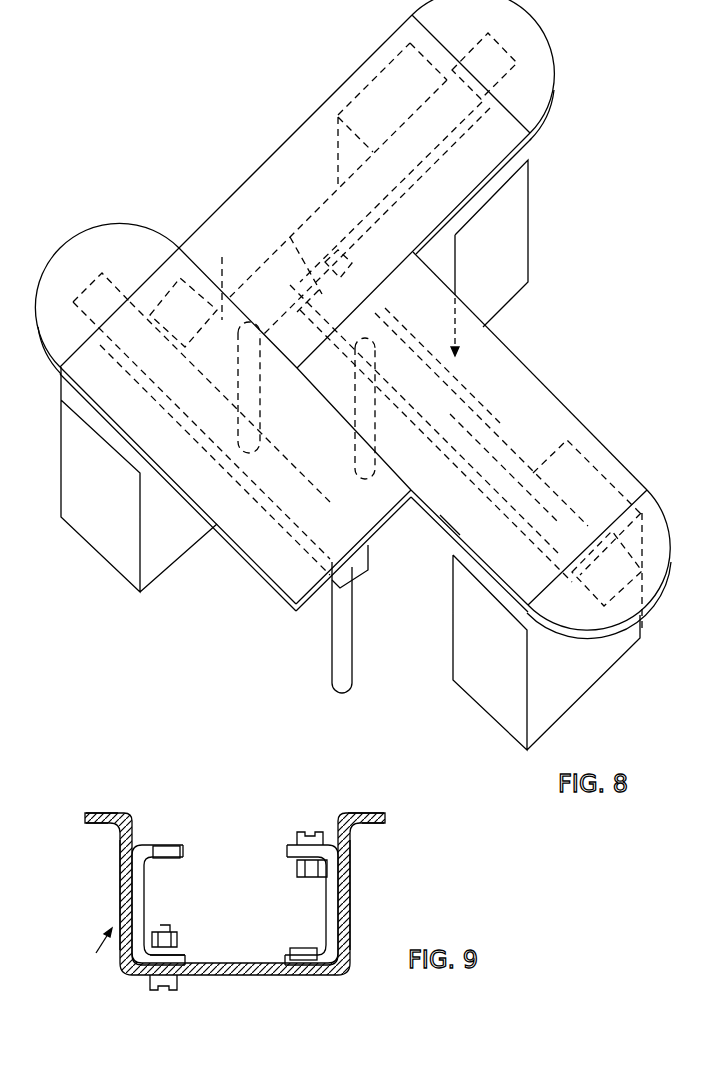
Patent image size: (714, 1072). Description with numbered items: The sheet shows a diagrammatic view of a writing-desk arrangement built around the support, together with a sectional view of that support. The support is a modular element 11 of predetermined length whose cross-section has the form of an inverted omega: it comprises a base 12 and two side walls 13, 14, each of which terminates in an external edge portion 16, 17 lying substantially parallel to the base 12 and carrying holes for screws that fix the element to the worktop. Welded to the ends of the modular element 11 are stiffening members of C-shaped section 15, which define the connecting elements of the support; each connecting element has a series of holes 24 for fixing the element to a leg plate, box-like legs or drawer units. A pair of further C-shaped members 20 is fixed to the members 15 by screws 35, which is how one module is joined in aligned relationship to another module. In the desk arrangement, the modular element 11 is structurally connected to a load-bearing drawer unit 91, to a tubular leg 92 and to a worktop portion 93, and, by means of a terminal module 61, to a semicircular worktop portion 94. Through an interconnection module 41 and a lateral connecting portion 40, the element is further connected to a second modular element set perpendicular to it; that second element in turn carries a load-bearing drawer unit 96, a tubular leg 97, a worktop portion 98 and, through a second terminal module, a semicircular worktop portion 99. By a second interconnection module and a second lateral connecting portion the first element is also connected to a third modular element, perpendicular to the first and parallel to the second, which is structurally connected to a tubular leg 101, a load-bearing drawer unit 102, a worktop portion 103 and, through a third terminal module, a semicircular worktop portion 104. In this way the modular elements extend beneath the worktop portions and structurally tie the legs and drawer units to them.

In FIG. 8, the modular element 11 is at (325, 228).
In FIG. 9, the modular element 11 is at (97, 952).
In FIG. 9, the base 12 is at (230, 975).
In FIG. 9, the side wall 13 is at (350, 880).
In FIG. 9, the side wall 14 is at (120, 867).
In FIG. 9, the C-shaped member 15 is at (183, 850).
In FIG. 9, the edge portion 16 is at (369, 813).
In FIG. 9, the edge portion 17 is at (98, 812).
In FIG. 9, the C-shaped member 20 is at (290, 948).
In FIG. 9, the holes 24 is at (160, 845).
In FIG. 9, the screws 35 is at (310, 832).
In FIG. 8, the lateral connecting portion 40 is at (190, 360).
In FIG. 8, the interconnection module 41 is at (225, 280).
In FIG. 8, the terminal module 61 is at (472, 50).
In FIG. 8, the load-bearing drawer unit 91 is at (519, 227).
In FIG. 8, the tubular leg 92 is at (262, 395).
In FIG. 8, the worktop portion 93 is at (313, 127).
In FIG. 8, the semicircular worktop portion 94 is at (545, 82).
In FIG. 8, the load-bearing drawer unit 96 is at (113, 543).
In FIG. 8, the tubular leg 97 is at (337, 650).
In FIG. 8, the worktop portion 98 is at (293, 583).
In FIG. 8, the semicircular worktop portion 99 is at (135, 243).
In FIG. 8, the tubular leg 101 is at (386, 525).
In FIG. 8, the load-bearing drawer unit 102 is at (460, 655).
In FIG. 8, the worktop portion 103 is at (447, 512).
In FIG. 8, the semicircular worktop portion 104 is at (628, 647).